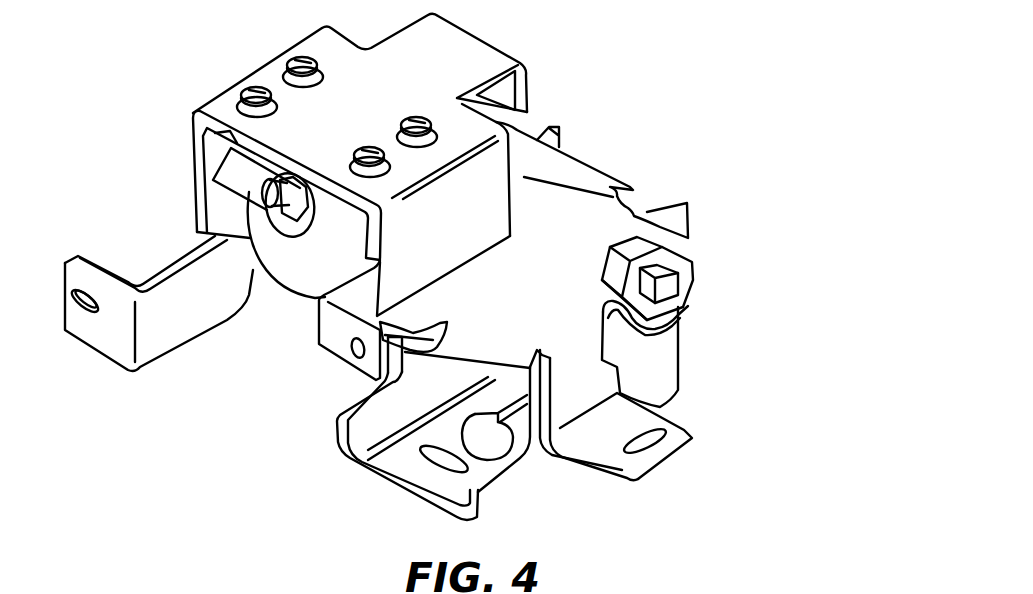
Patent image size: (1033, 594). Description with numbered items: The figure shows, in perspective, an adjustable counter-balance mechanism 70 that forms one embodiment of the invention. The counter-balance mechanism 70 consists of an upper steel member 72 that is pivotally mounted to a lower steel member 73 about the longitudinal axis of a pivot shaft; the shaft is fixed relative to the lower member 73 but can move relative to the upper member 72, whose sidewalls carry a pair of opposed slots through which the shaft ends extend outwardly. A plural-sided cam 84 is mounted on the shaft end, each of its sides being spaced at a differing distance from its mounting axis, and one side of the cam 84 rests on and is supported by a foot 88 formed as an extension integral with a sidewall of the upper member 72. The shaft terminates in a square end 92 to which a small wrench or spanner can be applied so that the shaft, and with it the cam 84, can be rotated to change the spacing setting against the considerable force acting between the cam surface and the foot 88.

The counter-balance mechanism 70 is at (650, 74).
The upper steel member 72 is at (563, 163).
The lower steel member 73 is at (662, 363).
The plural-sided cam 84 is at (693, 253).
The foot 88 is at (672, 318).
The square end 92 is at (667, 290).